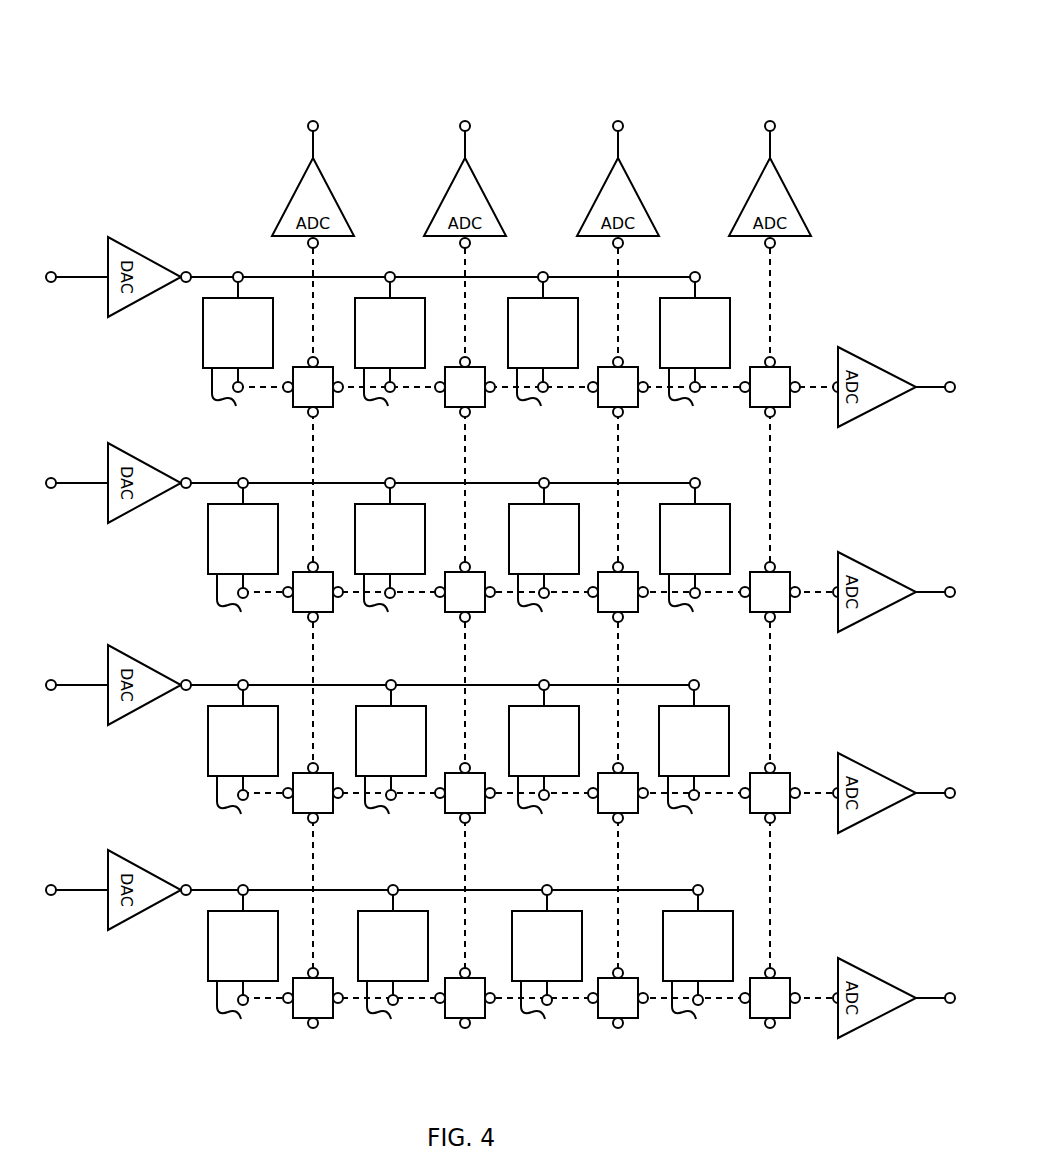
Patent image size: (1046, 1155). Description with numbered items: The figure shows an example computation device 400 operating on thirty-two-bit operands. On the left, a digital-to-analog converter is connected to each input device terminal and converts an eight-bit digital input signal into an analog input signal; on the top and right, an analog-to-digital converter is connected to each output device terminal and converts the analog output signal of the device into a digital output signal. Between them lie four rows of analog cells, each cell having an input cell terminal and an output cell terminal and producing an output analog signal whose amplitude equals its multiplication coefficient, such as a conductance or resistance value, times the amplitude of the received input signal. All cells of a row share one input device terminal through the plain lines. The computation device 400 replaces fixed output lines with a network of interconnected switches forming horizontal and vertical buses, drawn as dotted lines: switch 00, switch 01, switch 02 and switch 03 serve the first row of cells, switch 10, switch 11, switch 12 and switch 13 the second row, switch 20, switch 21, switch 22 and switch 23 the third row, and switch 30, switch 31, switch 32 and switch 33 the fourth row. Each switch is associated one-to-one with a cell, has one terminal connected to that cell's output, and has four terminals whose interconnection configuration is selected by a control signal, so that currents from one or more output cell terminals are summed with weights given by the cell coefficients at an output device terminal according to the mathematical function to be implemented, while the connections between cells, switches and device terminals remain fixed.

The computation device 400 is at (556, 78).
The switch 00 is at (313, 387).
The switch 01 is at (465, 387).
The switch 02 is at (618, 387).
The switch 03 is at (770, 387).
The switch 10 is at (313, 592).
The switch 11 is at (465, 592).
The switch 12 is at (618, 592).
The switch 13 is at (770, 592).
The switch 20 is at (313, 793).
The switch 21 is at (465, 793).
The switch 22 is at (618, 793).
The switch 23 is at (770, 793).
The switch 30 is at (313, 998).
The switch 31 is at (465, 998).
The switch 32 is at (618, 998).
The switch 33 is at (770, 998).